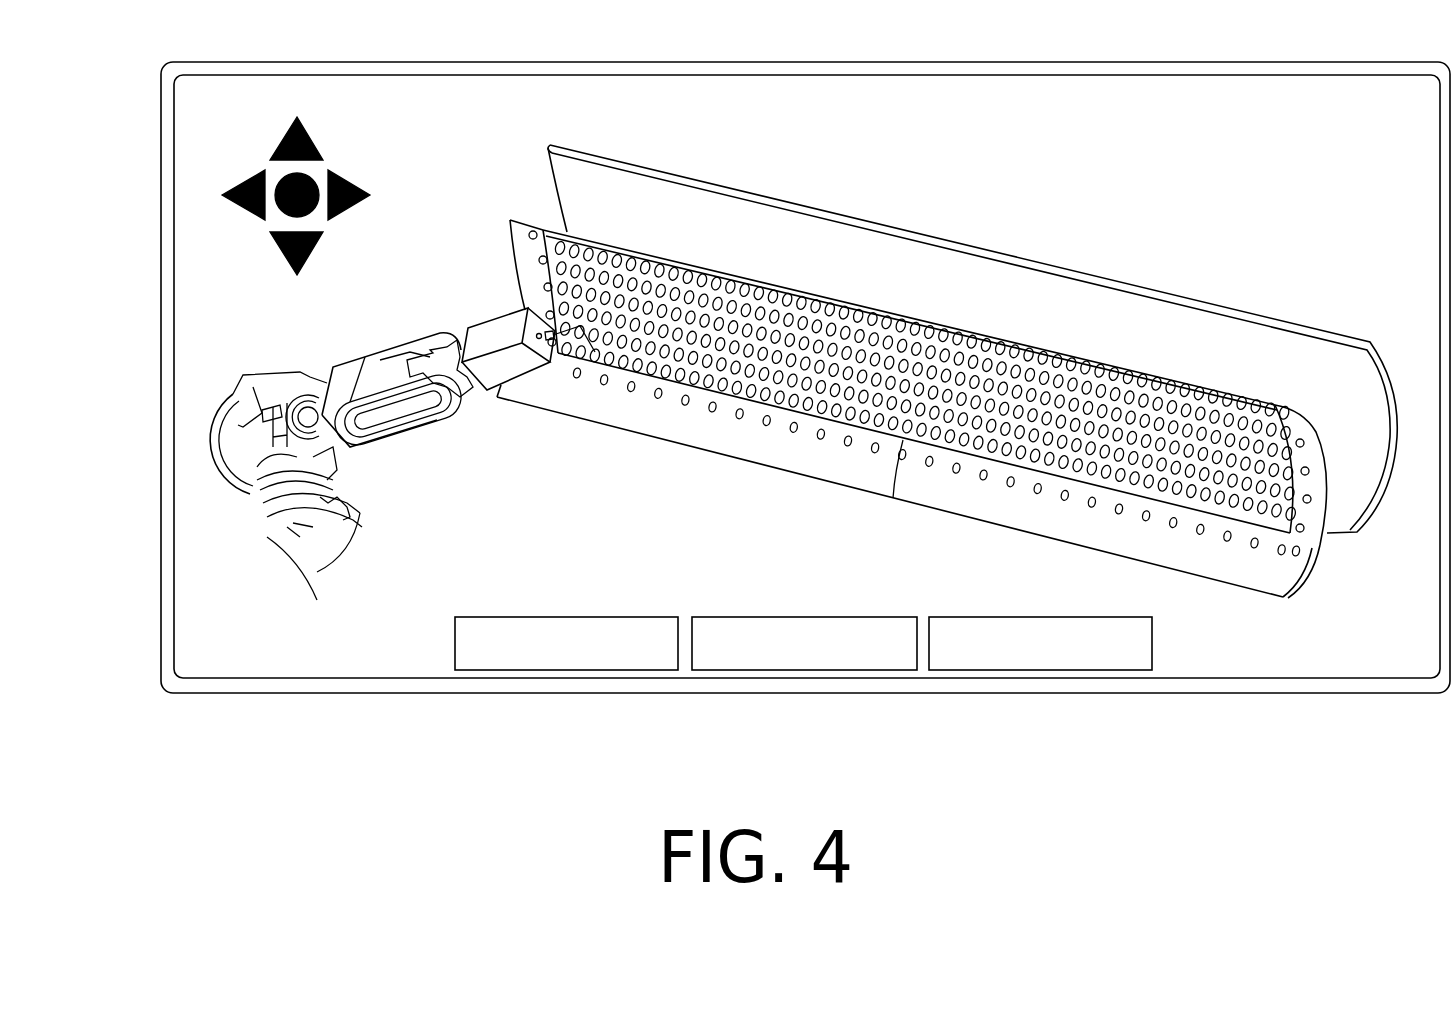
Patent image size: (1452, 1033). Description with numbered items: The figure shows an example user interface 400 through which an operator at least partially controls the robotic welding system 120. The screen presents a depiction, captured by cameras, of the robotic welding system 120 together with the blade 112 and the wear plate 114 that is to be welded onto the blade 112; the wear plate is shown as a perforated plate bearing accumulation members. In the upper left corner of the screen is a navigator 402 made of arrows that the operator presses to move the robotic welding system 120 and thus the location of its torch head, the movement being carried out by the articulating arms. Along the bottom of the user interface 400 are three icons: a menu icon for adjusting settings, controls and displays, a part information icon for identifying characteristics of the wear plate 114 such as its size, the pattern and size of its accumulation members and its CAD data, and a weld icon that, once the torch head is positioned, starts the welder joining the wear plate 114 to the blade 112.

The user interface 400 is at (682, 62).
The navigator 402 is at (210, 115).
The blade 112 is at (548, 147).
The wear plate 114 is at (513, 220).
The robotic welding system 120 is at (210, 450).